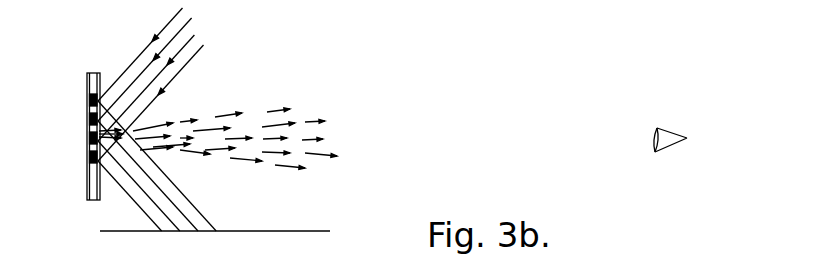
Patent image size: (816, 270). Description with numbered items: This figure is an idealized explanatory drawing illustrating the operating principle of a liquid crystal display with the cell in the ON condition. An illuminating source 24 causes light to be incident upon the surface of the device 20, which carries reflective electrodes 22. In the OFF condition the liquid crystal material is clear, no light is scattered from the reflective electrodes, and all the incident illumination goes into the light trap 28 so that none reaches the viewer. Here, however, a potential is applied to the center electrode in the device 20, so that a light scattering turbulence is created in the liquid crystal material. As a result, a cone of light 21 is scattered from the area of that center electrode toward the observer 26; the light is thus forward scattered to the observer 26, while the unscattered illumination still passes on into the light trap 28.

The cell 20 is at (92, 73).
The electrodes 22 is at (89, 108).
The illuminating source 24 is at (188, 30).
The cone of light 21 is at (275, 103).
The light trap 28 is at (233, 231).
The observer 26 is at (677, 133).